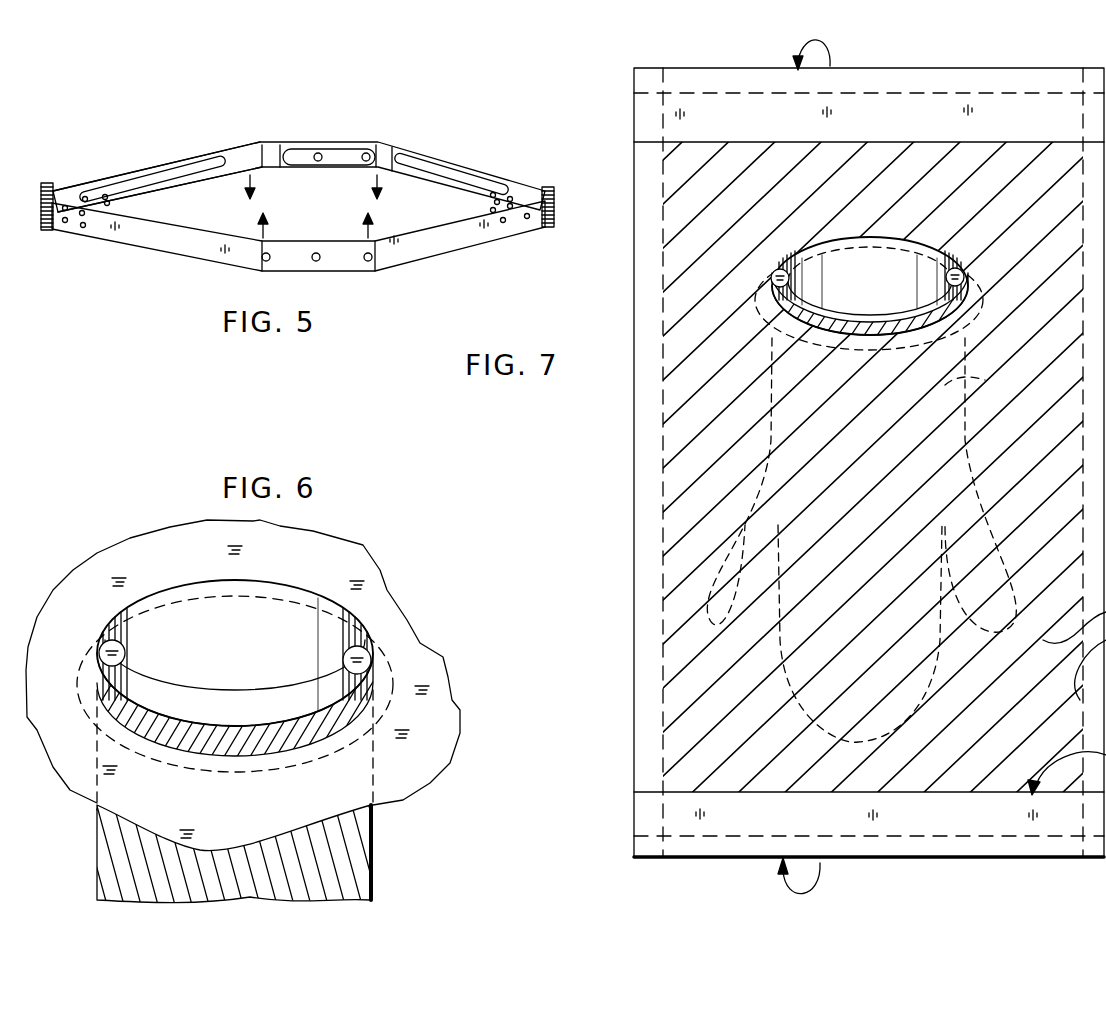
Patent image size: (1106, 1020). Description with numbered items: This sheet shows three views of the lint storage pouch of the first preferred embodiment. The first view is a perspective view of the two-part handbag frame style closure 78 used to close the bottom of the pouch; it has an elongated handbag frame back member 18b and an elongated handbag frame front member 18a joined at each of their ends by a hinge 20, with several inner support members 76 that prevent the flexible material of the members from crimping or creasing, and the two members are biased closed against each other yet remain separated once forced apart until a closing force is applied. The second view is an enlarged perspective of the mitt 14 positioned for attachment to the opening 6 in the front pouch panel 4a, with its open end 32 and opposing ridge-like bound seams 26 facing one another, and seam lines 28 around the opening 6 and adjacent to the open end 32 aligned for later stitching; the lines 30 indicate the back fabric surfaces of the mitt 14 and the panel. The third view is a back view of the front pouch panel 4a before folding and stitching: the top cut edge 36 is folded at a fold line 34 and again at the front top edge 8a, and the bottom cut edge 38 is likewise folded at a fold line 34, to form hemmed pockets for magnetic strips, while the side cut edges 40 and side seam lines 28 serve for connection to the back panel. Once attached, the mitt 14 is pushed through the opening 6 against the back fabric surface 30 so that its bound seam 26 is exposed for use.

In FIG. 6, the front pouch panel 4a is at (80, 782).
In FIG. 7, the front pouch panel 4a is at (663, 305).
In FIG. 6, the opening 6 is at (97, 668).
In FIG. 7, the opening 6 is at (963, 275).
In FIG. 7, the front top edge 8a is at (1048, 136).
In FIG. 6, the mitt 14 is at (173, 578).
In FIG. 7, the mitt 14 is at (980, 378).
In FIG. 5, the handbag frame front member 18a is at (153, 237).
In FIG. 5, the handbag frame back member 18b is at (412, 157).
In FIG. 5, the hinge 20 is at (41, 226).
In FIG. 6, the ridge-like bound seam 26 is at (343, 670).
In FIG. 7, the ridge-like bound seam 26 is at (938, 279).
In FIG. 6, the seam line 28 is at (287, 604).
In FIG. 7, the seam line 28 is at (878, 266).
In FIG. 6, the back fabric surface 30 is at (360, 828).
In FIG. 7, the back fabric surface 30 is at (958, 335).
In FIG. 6, the open end 32 is at (150, 637).
In FIG. 7, the fold line 34 is at (969, 82).
In FIG. 7, the top cut edge 36 is at (714, 62).
In FIG. 7, the bottom cut edge 38 is at (662, 866).
In FIG. 7, the side cut edge 40 is at (628, 588).
In FIG. 5, the inner support member 76 is at (203, 177).
In FIG. 5, the two-part handbag frame style closure 78 is at (150, 152).